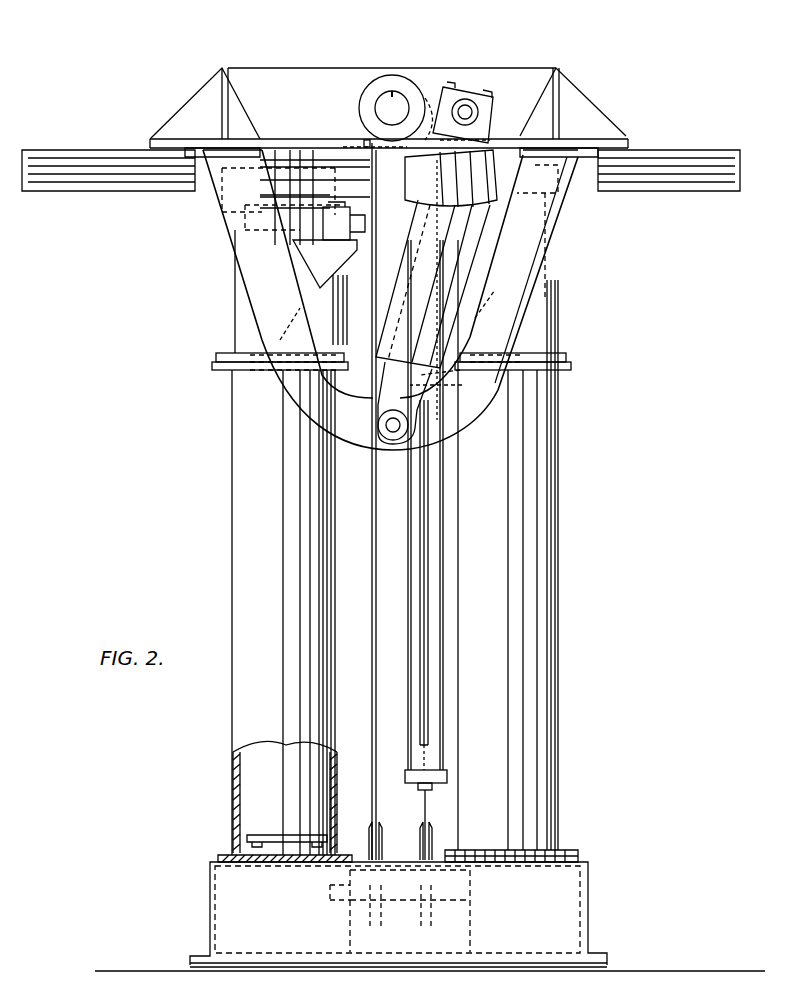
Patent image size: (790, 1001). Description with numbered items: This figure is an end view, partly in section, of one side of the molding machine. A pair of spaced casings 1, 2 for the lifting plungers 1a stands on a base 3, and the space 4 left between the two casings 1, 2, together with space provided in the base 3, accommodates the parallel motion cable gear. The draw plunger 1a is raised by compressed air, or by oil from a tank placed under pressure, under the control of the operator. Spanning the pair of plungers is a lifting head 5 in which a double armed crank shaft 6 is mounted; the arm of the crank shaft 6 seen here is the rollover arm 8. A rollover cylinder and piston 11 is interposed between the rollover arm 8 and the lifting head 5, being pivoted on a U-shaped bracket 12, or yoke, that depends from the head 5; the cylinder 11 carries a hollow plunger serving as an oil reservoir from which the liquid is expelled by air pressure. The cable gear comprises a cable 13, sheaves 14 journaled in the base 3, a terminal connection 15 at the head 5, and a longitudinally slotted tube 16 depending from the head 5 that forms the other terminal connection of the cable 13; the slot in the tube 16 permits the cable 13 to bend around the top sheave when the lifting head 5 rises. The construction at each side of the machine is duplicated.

The casing 1 is at (288, 506).
The lifting plunger 1a is at (285, 797).
The casing 2 is at (511, 551).
The base 3 is at (567, 914).
The space 4 is at (407, 501).
The lifting head 5 is at (340, 75).
The double armed crank shaft 6 is at (386, 100).
The rollover arm 8 is at (430, 88).
The rollover cylinder and piston 11 is at (400, 262).
The U-shaped bracket 12 is at (228, 231).
The cable 13 is at (422, 802).
The sheaves 14 is at (421, 835).
The terminal connection 15 is at (364, 143).
The longitudinally slotted tube 16 is at (408, 532).